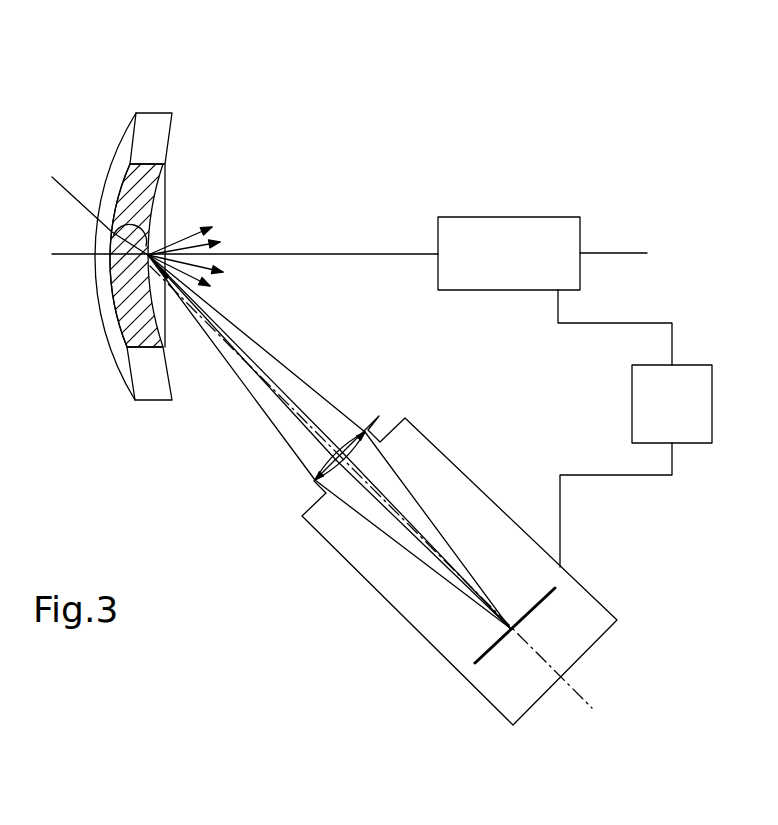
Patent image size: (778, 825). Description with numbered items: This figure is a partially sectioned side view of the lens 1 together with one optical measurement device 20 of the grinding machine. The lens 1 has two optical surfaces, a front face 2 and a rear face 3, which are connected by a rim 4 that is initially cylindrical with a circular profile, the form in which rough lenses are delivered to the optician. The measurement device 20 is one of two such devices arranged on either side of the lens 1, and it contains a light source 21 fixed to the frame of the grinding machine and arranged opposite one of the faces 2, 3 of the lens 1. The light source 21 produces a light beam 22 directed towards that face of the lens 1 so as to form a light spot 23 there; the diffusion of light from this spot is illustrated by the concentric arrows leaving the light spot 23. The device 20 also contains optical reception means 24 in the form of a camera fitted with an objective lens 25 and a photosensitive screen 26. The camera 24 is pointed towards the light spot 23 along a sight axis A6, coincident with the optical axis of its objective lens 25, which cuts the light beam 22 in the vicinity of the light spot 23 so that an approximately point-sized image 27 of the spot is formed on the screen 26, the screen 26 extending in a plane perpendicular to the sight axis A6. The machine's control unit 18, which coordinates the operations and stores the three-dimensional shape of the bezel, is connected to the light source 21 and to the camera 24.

The lens 1 is at (140, 99).
The front face 2 is at (127, 140).
The rear face 3 is at (158, 184).
The rim 4 is at (160, 113).
The sight axis A6 is at (60, 180).
The control unit 18 is at (684, 418).
The optical measurement device 20 is at (467, 396).
The light source 21 is at (516, 216).
The light beam 22 is at (371, 252).
The light spot 23 is at (113, 237).
The optical reception means 24 is at (513, 522).
The objective lens 25 is at (360, 434).
The photosensitive screen 26 is at (554, 590).
The image 27 is at (510, 627).